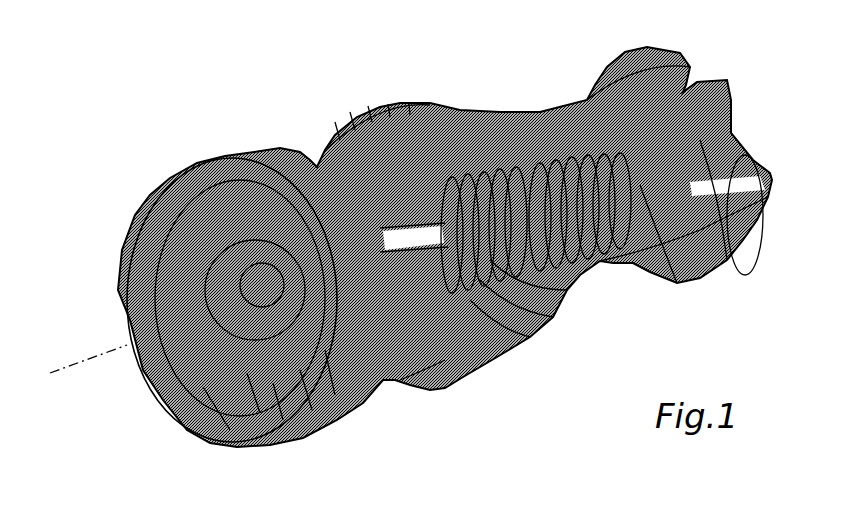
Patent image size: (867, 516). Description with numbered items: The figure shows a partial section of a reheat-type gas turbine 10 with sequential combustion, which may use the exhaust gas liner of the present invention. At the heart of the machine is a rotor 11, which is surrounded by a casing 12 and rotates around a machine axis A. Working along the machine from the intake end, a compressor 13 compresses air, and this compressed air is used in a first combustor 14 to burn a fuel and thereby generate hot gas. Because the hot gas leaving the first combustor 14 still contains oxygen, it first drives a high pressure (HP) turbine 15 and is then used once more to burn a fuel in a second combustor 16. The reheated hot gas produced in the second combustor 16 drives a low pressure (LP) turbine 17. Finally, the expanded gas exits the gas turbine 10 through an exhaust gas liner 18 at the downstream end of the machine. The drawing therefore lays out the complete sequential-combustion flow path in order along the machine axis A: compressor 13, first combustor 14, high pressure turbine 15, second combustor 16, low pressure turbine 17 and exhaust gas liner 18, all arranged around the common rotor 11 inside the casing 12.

The gas turbine 10 is at (300, 83).
The rotor 11 is at (418, 240).
The casing 12 is at (603, 268).
The compressor 13 is at (575, 163).
The first combustor 14 is at (466, 158).
The high pressure (HP) turbine 15 is at (468, 240).
The second combustor 16 is at (407, 185).
The low pressure (LP) turbine 17 is at (270, 190).
The exhaust gas liner 18 is at (368, 418).
The machine axis A is at (90, 358).